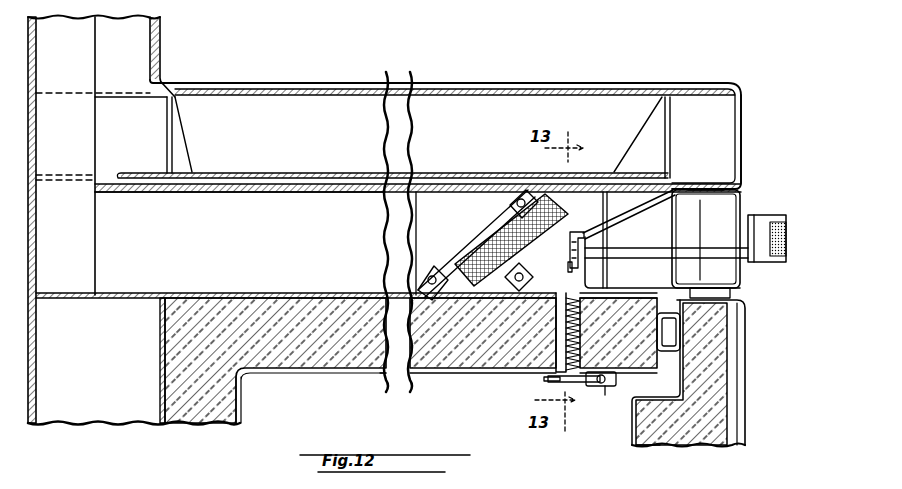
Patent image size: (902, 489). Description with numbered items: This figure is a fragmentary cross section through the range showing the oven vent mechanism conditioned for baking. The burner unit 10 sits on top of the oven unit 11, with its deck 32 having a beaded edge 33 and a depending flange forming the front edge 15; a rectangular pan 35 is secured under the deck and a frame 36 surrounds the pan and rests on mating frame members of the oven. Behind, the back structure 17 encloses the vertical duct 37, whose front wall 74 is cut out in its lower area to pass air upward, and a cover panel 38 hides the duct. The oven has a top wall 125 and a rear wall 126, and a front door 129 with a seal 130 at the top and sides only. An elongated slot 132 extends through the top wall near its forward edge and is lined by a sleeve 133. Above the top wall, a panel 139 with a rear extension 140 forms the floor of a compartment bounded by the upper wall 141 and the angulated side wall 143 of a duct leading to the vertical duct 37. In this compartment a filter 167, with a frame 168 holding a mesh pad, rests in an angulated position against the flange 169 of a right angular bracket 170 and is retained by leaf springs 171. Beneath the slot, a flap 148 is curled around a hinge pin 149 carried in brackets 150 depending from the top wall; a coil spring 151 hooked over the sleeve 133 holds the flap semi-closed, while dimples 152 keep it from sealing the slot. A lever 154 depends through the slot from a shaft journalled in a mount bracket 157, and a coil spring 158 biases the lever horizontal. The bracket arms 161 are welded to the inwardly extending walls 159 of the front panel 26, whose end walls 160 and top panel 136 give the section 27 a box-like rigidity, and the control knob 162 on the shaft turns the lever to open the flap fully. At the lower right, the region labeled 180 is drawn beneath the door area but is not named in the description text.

The burner unit 10 is at (531, 66).
The oven unit 11 is at (312, 390).
The front edge 15 is at (743, 116).
The back structure 17 is at (172, 36).
The front panel 26 is at (748, 196).
The section 27 is at (778, 207).
The deck 32 is at (445, 90).
The beaded edge 33 is at (392, 83).
The rectangular pan 35 is at (440, 172).
The frame 36 is at (141, 166).
The duct 37 is at (80, 190).
The cover panel 38 is at (36, 232).
The front wall 74 is at (95, 150).
The top wall 125 is at (384, 374).
The rear wall 126 is at (240, 412).
The front door 129 is at (746, 366).
The seal 130 is at (700, 331).
The elongated slot 132 is at (560, 338).
The sleeve 133 is at (558, 376).
The top panel 136 is at (690, 250).
The panel 139 is at (312, 293).
The extension 140 is at (80, 300).
The upper wall 141 is at (262, 193).
The angulated side wall 143 is at (373, 243).
The flap 148 is at (582, 384).
The hinge pin 149 is at (621, 382).
The brackets 150 is at (612, 396).
The coil spring 151 is at (610, 290).
The dimples 152 is at (544, 396).
The lever 154 is at (573, 250).
The mount bracket 157 is at (630, 209).
The coil spring 158 is at (570, 266).
The inwardly extending walls 159 is at (684, 191).
The end walls 160 is at (758, 222).
The arms 161 is at (650, 248).
The control knob 162 is at (780, 254).
The filter 167 is at (482, 248).
The frame 168 is at (446, 272).
The flange 169 is at (504, 220).
The right angular bracket 170 is at (519, 196).
The leaf springs 171 is at (510, 283).
The jamb base 180 is at (640, 450).